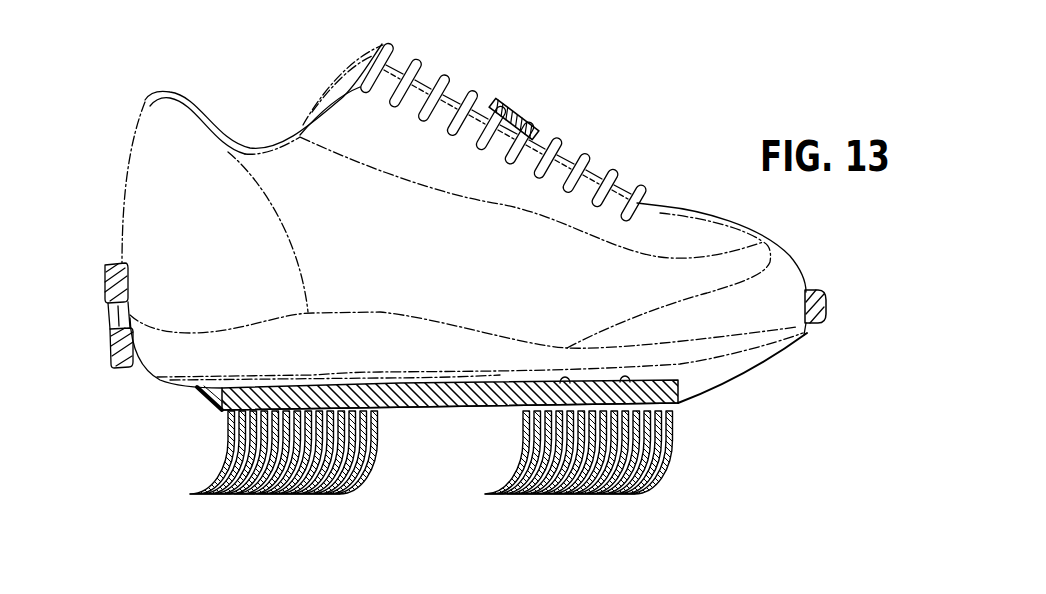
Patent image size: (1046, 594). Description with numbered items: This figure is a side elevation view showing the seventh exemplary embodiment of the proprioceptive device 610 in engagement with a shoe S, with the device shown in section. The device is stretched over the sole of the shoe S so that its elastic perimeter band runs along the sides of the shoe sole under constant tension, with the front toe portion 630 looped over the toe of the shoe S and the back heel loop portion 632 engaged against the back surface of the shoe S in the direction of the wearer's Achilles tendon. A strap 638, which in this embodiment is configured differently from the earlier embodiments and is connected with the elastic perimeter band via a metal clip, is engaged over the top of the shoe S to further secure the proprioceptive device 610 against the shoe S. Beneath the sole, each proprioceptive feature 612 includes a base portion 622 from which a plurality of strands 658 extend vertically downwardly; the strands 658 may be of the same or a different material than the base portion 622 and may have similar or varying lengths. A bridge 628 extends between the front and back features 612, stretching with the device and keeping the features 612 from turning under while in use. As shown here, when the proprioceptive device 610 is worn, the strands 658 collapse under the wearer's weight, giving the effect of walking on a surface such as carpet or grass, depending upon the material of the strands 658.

The shoe S is at (600, 168).
The proprioceptive device 610 is at (759, 381).
The proprioceptive feature 612 is at (219, 455).
The base portion 622 is at (260, 392).
The bridge 628 is at (427, 412).
The front toe portion 630 is at (116, 267).
The back heel loop portion 632 is at (822, 305).
The strap 638 is at (520, 114).
The strands 658 is at (258, 495).